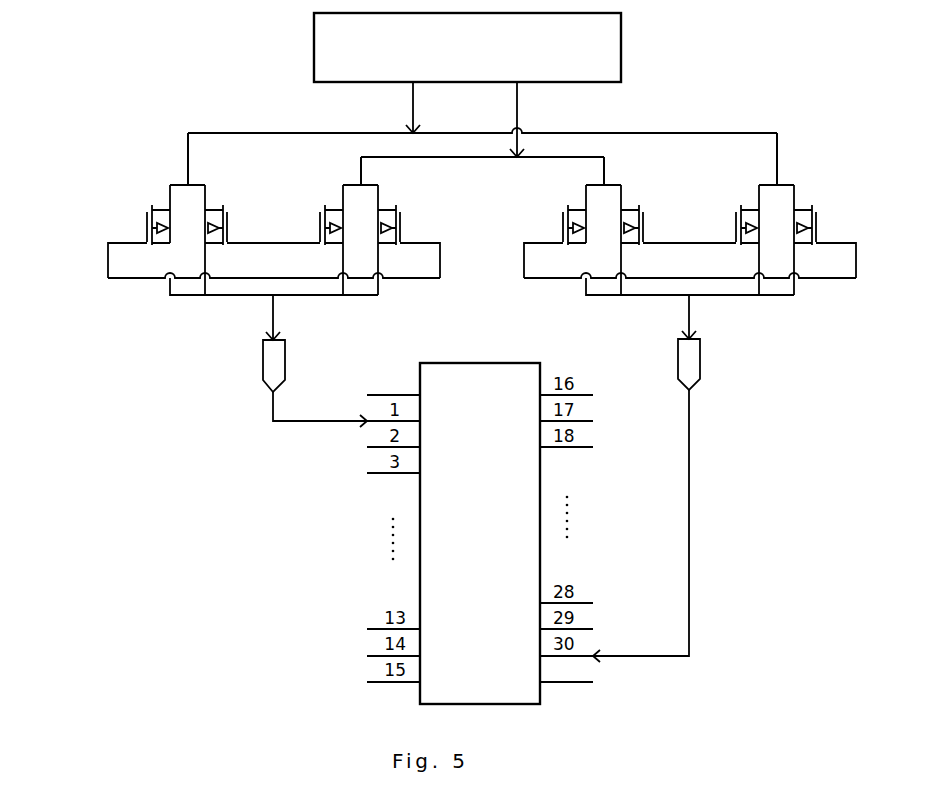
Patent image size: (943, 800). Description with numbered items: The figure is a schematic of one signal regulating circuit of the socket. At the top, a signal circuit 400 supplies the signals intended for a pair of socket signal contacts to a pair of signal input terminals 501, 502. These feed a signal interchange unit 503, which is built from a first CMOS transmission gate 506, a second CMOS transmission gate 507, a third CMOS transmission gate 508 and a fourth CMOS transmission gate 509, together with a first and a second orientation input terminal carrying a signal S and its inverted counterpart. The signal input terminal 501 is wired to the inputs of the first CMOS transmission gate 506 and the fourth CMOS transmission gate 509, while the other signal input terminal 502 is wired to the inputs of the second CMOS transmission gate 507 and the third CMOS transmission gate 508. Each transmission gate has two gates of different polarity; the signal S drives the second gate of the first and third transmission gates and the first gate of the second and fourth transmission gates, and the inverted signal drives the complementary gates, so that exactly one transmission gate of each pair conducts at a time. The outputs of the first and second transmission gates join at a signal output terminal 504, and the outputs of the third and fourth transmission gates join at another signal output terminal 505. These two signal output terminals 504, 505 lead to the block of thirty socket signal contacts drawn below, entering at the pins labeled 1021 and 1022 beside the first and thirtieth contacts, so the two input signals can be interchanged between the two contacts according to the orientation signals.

The signal circuit 400 is at (467, 47).
The signal input terminal 501 is at (482, 133).
The signal input terminal 502 is at (482, 133).
The signal interchange unit 503 is at (92, 150).
The signal output terminal 504 is at (297, 361).
The signal output terminal 505 is at (666, 478).
The first CMOS transmission gate 506 is at (161, 192).
The second CMOS transmission gate 507 is at (335, 192).
The third CMOS transmission gate 508 is at (576, 192).
The fourth CMOS transmission gate 509 is at (750, 192).
The first input pin 1021 is at (393, 384).
The second input pin 1022 is at (566, 671).